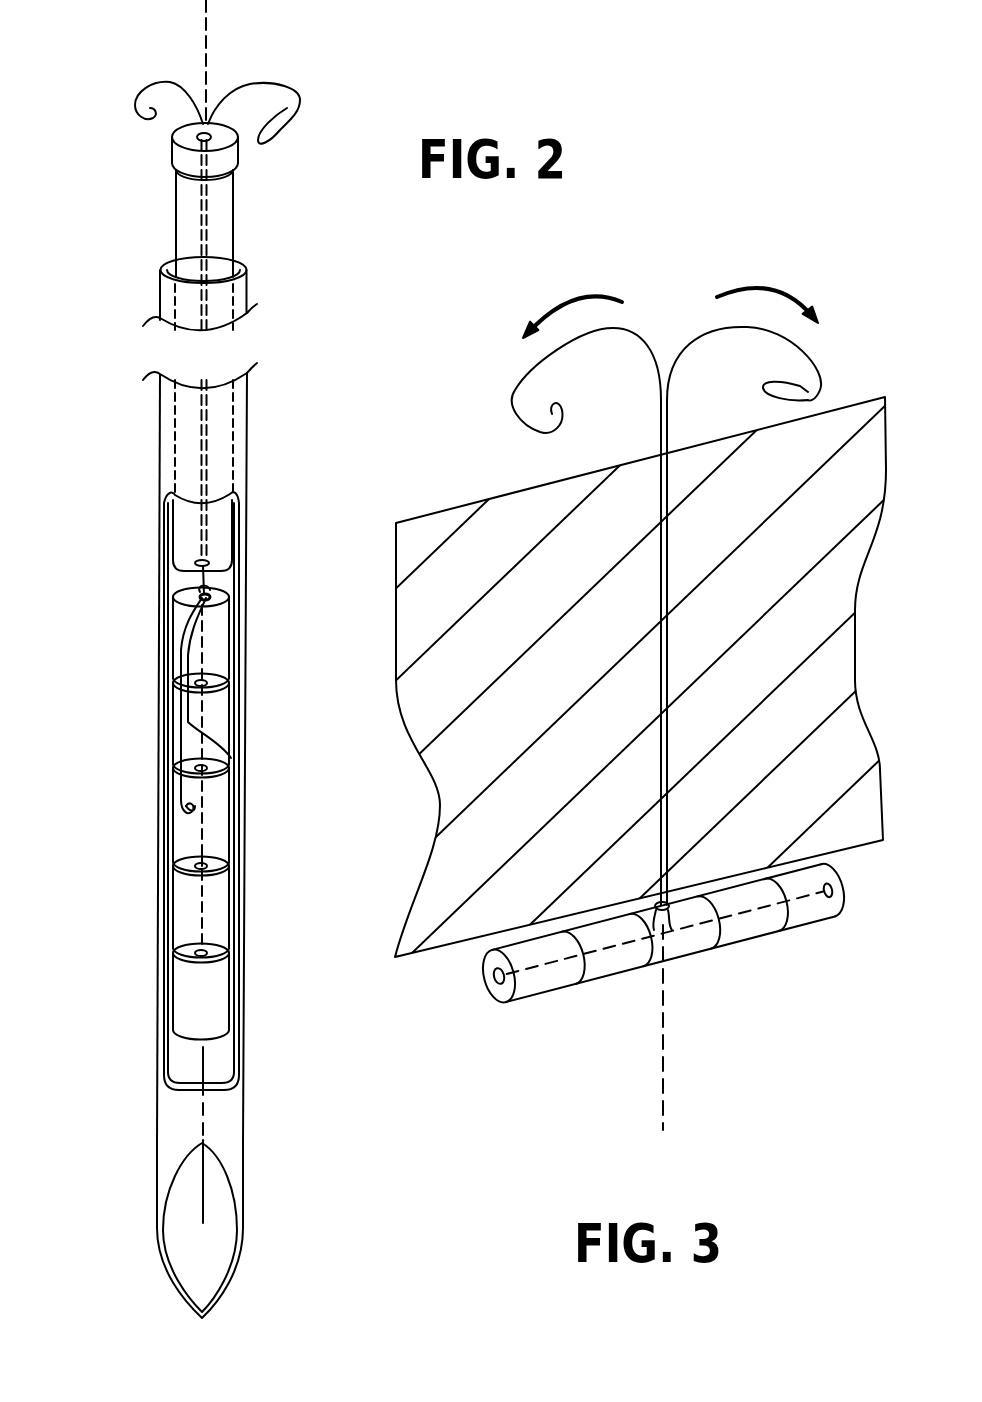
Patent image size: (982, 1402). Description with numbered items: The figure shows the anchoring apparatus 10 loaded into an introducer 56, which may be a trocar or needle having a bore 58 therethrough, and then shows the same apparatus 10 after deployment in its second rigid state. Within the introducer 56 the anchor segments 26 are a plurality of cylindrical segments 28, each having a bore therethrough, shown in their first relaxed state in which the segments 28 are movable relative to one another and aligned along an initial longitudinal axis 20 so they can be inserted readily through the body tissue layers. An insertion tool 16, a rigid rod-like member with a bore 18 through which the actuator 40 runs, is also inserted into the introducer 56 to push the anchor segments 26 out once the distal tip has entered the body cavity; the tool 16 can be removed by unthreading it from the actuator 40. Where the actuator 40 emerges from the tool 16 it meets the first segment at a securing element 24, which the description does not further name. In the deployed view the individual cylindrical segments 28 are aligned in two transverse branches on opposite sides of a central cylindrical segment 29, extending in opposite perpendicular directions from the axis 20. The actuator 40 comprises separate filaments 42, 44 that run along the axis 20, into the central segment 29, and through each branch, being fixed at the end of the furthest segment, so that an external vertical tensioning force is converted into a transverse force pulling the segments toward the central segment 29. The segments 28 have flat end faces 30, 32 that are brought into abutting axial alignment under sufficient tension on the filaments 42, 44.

In FIG. 2, the apparatus 10 is at (270, 238).
In FIG. 3, the apparatus 10 is at (682, 614).
In FIG. 2, the insertion tool 16 is at (218, 540).
In FIG. 2, the bore 18 is at (213, 145).
In FIG. 2, the initial longitudinal axis 20 is at (207, 13).
In FIG. 3, the initial longitudinal axis 20 is at (663, 1130).
In FIG. 2, the knot 24 is at (225, 573).
In FIG. 2, the anchor segments 26 is at (209, 814).
In FIG. 3, the anchor segments 26 is at (633, 937).
In FIG. 2, the cylindrical segments 28 is at (183, 913).
In FIG. 3, the cylindrical segments 28 is at (527, 947).
In FIG. 2, the central cylindrical segment 29 is at (178, 817).
In FIG. 3, the central cylindrical segment 29 is at (672, 900).
In FIG. 3, the end face 30 is at (500, 993).
In FIG. 3, the end face 32 is at (567, 968).
In FIG. 2, the actuator 40 is at (180, 158).
In FIG. 2, the filament 42 is at (283, 84).
In FIG. 3, the filament 42 is at (800, 340).
In FIG. 2, the filament 44 is at (177, 84).
In FIG. 3, the filament 44 is at (540, 362).
In FIG. 2, the introducer 56 is at (245, 1105).
In FIG. 2, the bore 58 is at (203, 1255).